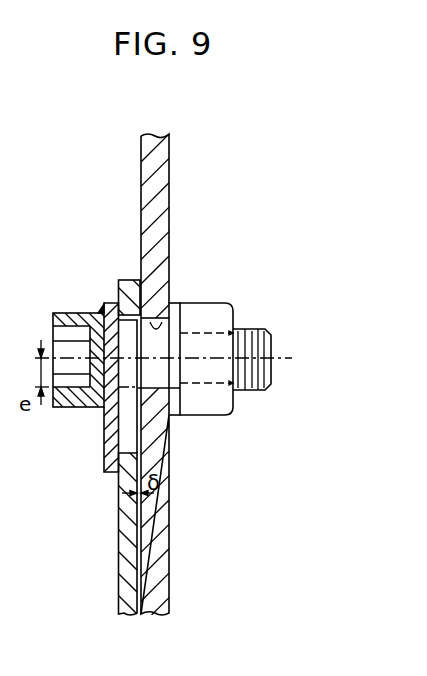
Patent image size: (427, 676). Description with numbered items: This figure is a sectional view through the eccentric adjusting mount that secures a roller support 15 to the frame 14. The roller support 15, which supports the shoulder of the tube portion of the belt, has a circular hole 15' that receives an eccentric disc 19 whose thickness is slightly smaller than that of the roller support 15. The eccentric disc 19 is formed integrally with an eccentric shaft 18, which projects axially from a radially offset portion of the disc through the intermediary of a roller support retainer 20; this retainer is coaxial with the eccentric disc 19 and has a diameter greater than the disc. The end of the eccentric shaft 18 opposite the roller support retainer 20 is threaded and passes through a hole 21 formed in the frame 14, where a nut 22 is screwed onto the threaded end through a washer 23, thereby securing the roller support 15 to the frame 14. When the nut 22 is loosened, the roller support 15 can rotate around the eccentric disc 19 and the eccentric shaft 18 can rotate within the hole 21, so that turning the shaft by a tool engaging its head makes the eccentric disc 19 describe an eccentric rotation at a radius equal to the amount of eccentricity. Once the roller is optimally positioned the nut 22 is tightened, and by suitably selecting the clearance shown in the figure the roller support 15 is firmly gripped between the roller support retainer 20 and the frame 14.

The frame 14 is at (169, 542).
The roller support 15 is at (92, 440).
The circular hole 15' is at (176, 387).
The eccentric shaft 18 is at (75, 312).
The eccentric disc 19 is at (110, 456).
The roller support retainer 20 is at (111, 443).
The hole 21 is at (170, 302).
The nut 22 is at (218, 315).
The washer 23 is at (175, 302).